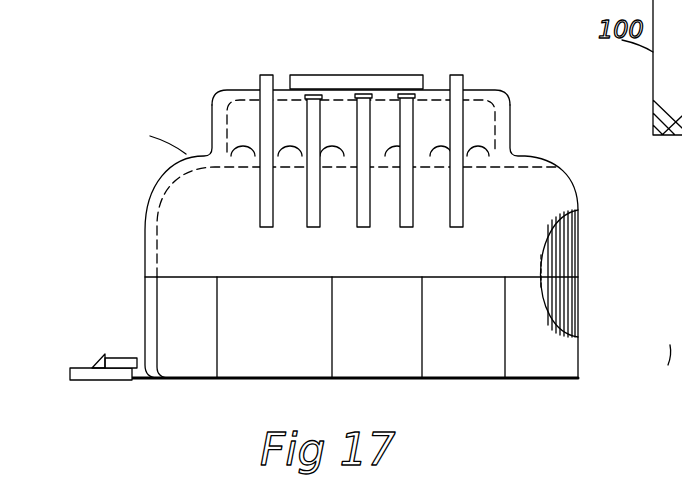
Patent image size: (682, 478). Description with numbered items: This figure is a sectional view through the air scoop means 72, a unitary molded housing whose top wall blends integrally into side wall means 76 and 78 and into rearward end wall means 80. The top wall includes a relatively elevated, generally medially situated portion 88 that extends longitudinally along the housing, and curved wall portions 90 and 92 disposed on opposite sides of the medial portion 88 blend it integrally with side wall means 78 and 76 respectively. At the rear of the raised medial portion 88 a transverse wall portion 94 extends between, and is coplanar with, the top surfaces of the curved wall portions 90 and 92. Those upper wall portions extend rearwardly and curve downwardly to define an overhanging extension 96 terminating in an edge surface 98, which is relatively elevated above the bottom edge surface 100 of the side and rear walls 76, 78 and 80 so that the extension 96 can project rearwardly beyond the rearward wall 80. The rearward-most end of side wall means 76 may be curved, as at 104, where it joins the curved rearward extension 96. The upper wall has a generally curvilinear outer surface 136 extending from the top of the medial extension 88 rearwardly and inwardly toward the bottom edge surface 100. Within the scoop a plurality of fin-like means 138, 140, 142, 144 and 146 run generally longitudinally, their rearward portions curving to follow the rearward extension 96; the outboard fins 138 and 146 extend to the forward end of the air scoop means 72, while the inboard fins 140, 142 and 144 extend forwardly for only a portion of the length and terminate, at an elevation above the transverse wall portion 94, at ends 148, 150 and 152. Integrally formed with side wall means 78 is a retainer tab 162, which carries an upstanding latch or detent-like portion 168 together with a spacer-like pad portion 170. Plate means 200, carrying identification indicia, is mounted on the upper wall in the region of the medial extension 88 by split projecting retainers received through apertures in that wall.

The air scoop means 72 is at (198, 81).
The side wall means 76 is at (584, 238).
The side wall means 78 is at (145, 254).
The rearward end wall means 80 is at (398, 336).
The medially situated portion 88 is at (513, 105).
The curved wall portion 90 is at (147, 137).
The curved wall portion 92 is at (525, 156).
The transverse wall portion 94 is at (335, 150).
The overhanging extension 96 is at (370, 251).
The edge surface 98 is at (437, 278).
The bottom edge surface 100 is at (452, 379).
The curved end 104 is at (552, 290).
The outer surface 136 is at (438, 115).
The fin-like means 138 is at (464, 222).
The fin-like means 140 is at (414, 226).
The fin-like means 142 is at (371, 227).
The fin-like means 144 is at (307, 226).
The fin-like means 146 is at (274, 224).
The end 148 is at (312, 95).
The end 150 is at (361, 94).
The end 152 is at (406, 94).
The tab 162 is at (70, 374).
The latch portion 168 is at (100, 362).
The spacer-like pad portion 170 is at (126, 357).
The plate means 200 is at (296, 74).